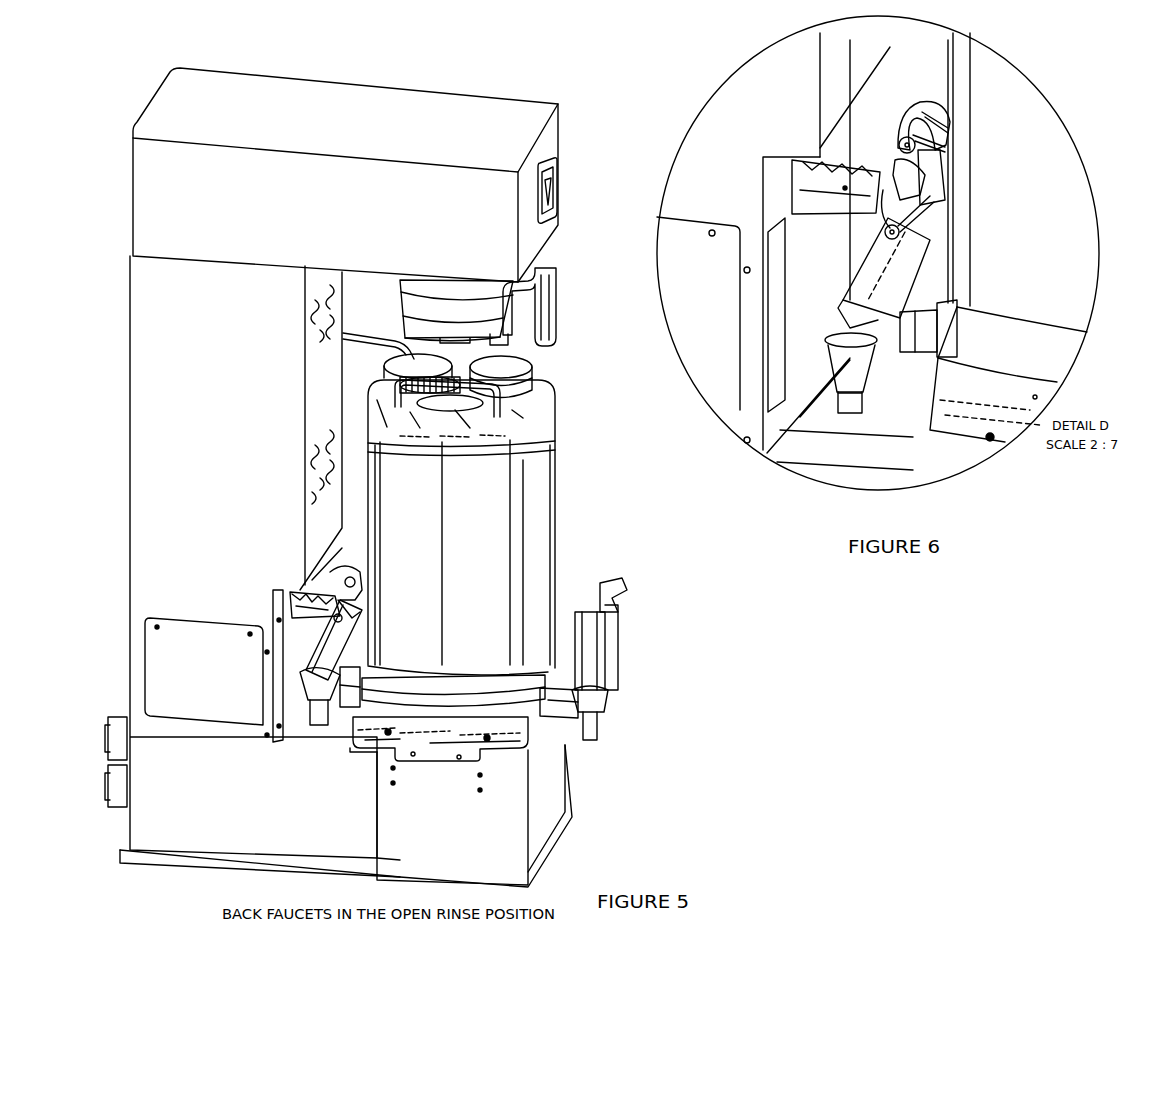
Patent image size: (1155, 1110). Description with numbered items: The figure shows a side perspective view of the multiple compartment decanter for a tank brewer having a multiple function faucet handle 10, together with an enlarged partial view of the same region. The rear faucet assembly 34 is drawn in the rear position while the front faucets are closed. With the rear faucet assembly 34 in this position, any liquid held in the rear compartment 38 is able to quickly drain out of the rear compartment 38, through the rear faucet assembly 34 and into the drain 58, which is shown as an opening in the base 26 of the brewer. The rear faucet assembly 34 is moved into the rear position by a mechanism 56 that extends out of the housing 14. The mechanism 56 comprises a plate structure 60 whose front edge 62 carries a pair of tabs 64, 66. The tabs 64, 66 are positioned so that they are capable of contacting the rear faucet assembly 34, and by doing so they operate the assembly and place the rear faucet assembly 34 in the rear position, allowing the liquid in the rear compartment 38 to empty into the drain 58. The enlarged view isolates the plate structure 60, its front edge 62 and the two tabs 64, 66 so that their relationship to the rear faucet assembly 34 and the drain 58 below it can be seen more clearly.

In FIG. 5, the multiple function faucet handle 10 is at (577, 280).
In FIG. 5, the housing 14 is at (157, 428).
In FIG. 5, the base 26 is at (197, 831).
In FIG. 5, the rear faucet assembly 34 is at (357, 531).
In FIG. 6, the rear faucet assembly 34 is at (921, 74).
In FIG. 5, the rear compartment 38 is at (395, 475).
In FIG. 6, the rear compartment 38 is at (1010, 98).
In FIG. 5, the mechanism 56 is at (290, 549).
In FIG. 6, the mechanism 56 is at (880, 107).
In FIG. 5, the drain 58 is at (337, 722).
In FIG. 6, the drain 58 is at (815, 415).
In FIG. 5, the plate structure 60 is at (303, 592).
In FIG. 6, the plate structure 60 is at (838, 203).
In FIG. 5, the front edge 62 is at (322, 593).
In FIG. 6, the front edge 62 is at (868, 187).
In FIG. 5, the tab 64 is at (340, 600).
In FIG. 6, the tab 64 is at (887, 170).
In FIG. 5, the tab 66 is at (330, 608).
In FIG. 6, the tab 66 is at (875, 205).